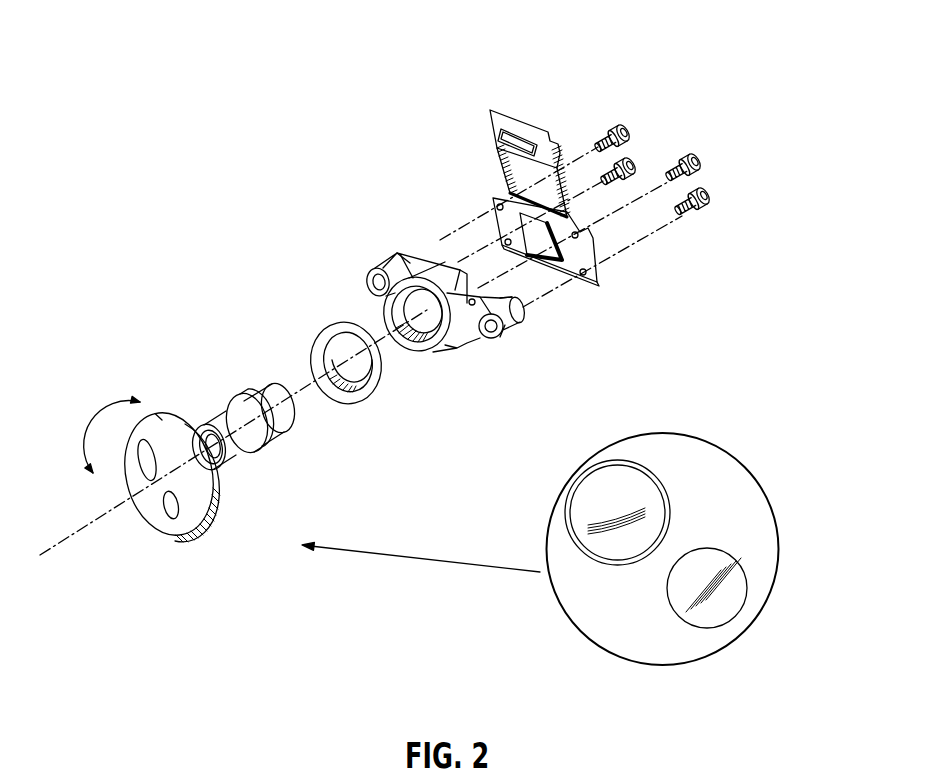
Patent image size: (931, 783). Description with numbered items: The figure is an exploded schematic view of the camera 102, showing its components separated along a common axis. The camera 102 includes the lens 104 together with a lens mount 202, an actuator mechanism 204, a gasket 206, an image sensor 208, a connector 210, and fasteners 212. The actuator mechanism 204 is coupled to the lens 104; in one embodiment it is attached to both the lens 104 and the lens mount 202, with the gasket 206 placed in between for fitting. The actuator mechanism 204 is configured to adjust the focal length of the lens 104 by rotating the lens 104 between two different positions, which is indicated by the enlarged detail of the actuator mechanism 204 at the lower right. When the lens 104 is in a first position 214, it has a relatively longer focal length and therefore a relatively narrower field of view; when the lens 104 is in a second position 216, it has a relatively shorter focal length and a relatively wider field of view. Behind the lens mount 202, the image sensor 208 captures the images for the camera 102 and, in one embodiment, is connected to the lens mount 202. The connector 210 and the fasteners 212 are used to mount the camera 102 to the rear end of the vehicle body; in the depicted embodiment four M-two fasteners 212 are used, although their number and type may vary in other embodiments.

The camera 102 is at (688, 56).
The lens 104 is at (240, 465).
The lens mount 202 is at (368, 258).
The actuator mechanism 204 is at (200, 527).
The gasket 206 is at (370, 400).
The image sensor 208 is at (528, 240).
The connector 210 is at (492, 132).
The fasteners 212 is at (632, 120).
The first position 214 is at (743, 606).
The second position 216 is at (590, 472).